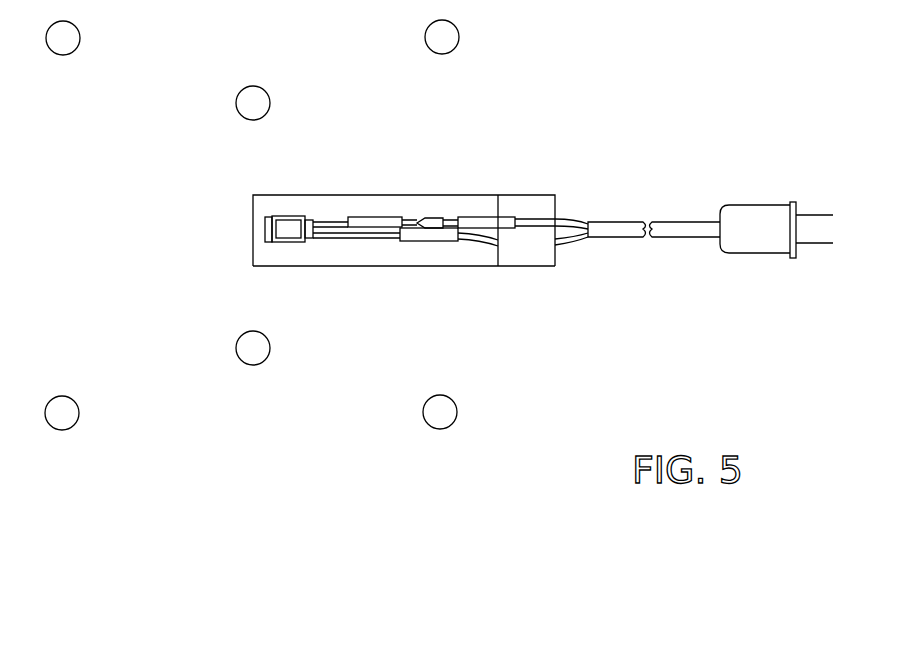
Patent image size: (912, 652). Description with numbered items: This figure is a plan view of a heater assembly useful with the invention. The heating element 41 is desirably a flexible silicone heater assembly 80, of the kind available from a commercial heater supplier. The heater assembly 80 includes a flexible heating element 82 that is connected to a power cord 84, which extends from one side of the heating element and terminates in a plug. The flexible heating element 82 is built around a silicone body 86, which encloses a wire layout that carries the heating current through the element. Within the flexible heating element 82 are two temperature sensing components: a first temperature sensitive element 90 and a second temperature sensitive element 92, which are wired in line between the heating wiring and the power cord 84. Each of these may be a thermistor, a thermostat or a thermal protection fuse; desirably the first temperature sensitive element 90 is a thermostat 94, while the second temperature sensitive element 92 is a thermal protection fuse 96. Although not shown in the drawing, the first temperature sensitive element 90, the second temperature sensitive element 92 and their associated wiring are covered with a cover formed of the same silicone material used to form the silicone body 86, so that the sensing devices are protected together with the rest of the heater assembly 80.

The heating element 41 is at (576, 42).
The flexible silicone heater assembly 80 is at (535, 120).
The flexible heating element 82 is at (523, 153).
The power cord 84 is at (740, 207).
The silicone body 86 is at (515, 310).
The first temperature sensitive element 90 is at (287, 233).
The second temperature sensitive element 92 is at (428, 218).
The thermostat 94 is at (283, 223).
The thermal protection fuse 96 is at (435, 218).